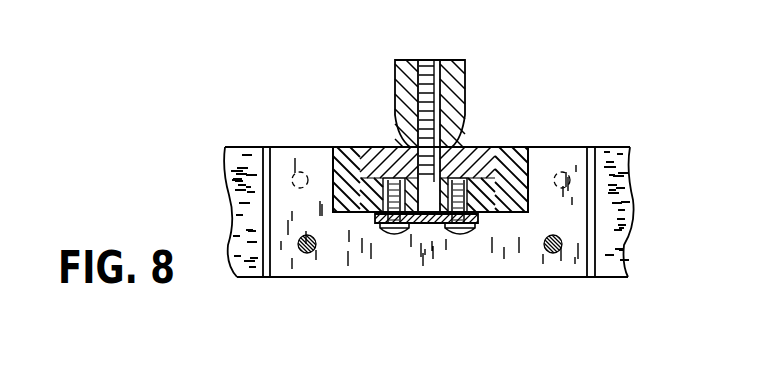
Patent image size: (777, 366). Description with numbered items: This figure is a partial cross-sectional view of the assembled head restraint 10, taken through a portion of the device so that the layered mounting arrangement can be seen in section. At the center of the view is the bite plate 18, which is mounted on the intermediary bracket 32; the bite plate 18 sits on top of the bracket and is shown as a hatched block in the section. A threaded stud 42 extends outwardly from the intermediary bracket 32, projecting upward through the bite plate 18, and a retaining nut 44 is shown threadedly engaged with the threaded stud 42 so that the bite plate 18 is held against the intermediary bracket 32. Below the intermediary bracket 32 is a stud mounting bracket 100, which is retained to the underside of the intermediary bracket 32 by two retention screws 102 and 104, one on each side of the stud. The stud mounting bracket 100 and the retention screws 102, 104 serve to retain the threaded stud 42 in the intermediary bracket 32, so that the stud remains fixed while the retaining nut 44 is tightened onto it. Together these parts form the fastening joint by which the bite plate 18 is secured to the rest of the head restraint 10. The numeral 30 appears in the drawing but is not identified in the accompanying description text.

The head restraint 10 is at (297, 108).
The bite plate 18 is at (480, 152).
The base body 30 is at (398, 262).
The intermediary bracket 32 is at (533, 163).
The threaded stud 42 is at (432, 60).
The retaining nut 44 is at (457, 103).
The stud mounting bracket 100 is at (430, 226).
The retention screw 102 is at (388, 237).
The retention screw 104 is at (468, 234).